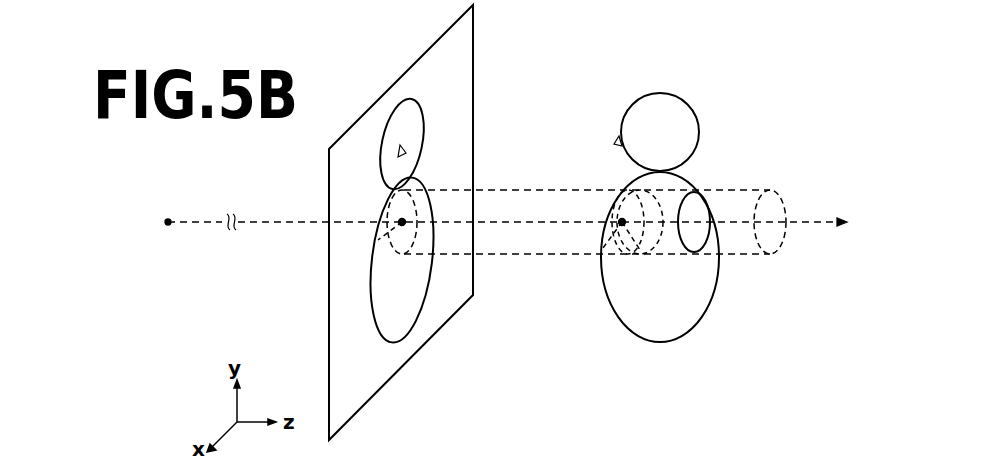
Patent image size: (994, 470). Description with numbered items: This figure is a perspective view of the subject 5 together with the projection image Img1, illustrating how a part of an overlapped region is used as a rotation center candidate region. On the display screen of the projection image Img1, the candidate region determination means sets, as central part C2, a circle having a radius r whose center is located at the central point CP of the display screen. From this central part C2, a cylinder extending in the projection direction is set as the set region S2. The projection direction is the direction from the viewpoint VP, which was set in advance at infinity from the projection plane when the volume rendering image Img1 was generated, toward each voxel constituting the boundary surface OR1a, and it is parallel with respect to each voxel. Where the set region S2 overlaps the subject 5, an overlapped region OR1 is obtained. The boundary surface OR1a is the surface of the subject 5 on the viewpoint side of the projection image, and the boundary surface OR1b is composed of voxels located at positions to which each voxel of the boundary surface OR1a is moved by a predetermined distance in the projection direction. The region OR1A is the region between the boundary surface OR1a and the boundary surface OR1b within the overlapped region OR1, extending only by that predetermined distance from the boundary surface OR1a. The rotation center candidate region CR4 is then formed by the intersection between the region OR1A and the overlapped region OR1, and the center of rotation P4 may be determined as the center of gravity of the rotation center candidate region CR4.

The projection image Img1 is at (452, 26).
The subject 5 is at (395, 112).
The viewpoint VP is at (168, 218).
The central part C2 is at (390, 194).
The central point CP is at (398, 226).
The center of rotation P4 is at (620, 220).
The set region S2 is at (735, 200).
The overlapped region OR1 is at (670, 252).
The boundary surface OR1a is at (606, 250).
The boundary surface OR1b is at (652, 258).
The region OR1A is at (638, 256).
The rotation center candidate region CR4 is at (614, 246).